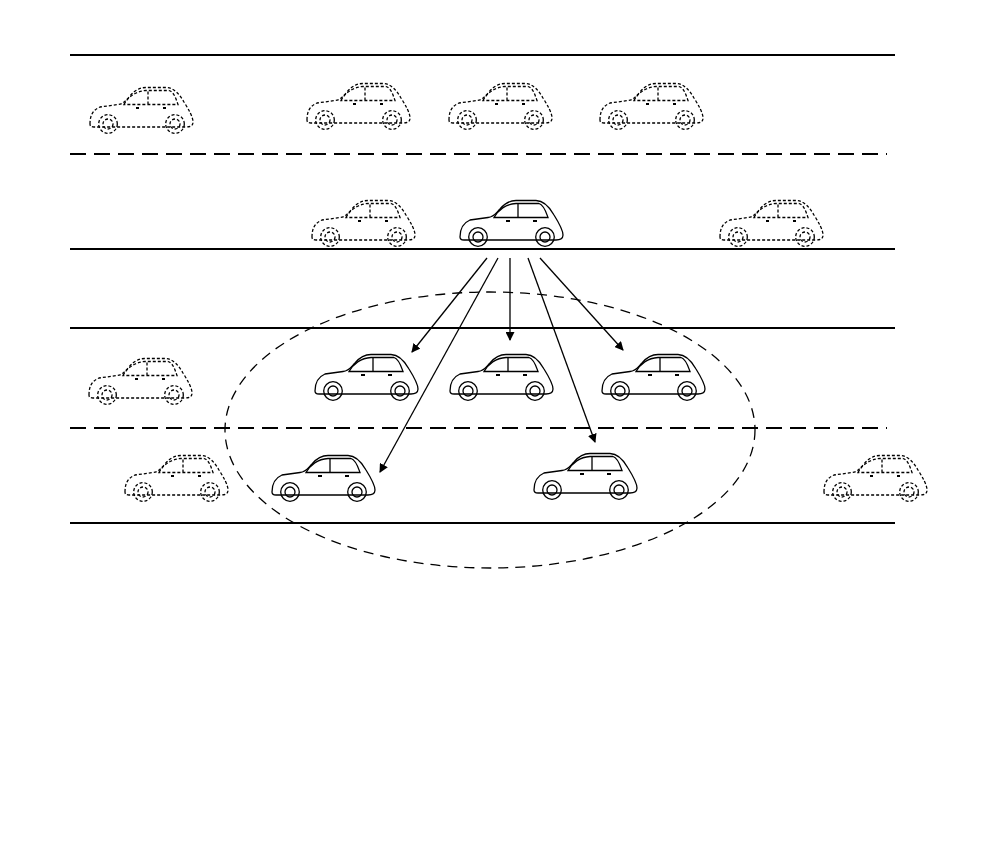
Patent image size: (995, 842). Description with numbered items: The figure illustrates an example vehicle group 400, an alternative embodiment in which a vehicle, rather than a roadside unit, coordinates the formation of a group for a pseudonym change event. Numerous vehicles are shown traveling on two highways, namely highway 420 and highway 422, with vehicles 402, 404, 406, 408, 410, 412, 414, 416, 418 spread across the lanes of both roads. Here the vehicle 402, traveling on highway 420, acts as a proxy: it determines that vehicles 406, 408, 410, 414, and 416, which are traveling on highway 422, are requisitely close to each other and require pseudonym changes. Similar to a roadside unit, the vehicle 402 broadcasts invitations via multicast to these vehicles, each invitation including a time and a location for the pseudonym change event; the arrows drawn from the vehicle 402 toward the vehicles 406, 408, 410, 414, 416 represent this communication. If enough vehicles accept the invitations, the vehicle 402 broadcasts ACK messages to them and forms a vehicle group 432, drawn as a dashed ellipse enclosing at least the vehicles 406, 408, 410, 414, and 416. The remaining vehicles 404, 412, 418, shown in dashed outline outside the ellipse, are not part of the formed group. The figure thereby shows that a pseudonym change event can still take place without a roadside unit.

The vehicle group 400 is at (498, 391).
The vehicle 402 is at (511, 207).
The vehicle 404 is at (140, 389).
The vehicle 406 is at (366, 386).
The vehicle 408 is at (501, 386).
The vehicle 410 is at (653, 386).
The vehicle 412 is at (176, 486).
The vehicle 414 is at (323, 486).
The vehicle 416 is at (585, 485).
The vehicle 418 is at (875, 486).
The highway 420 is at (482, 141).
The highway 422 is at (482, 415).
The vehicle group 432 is at (490, 413).